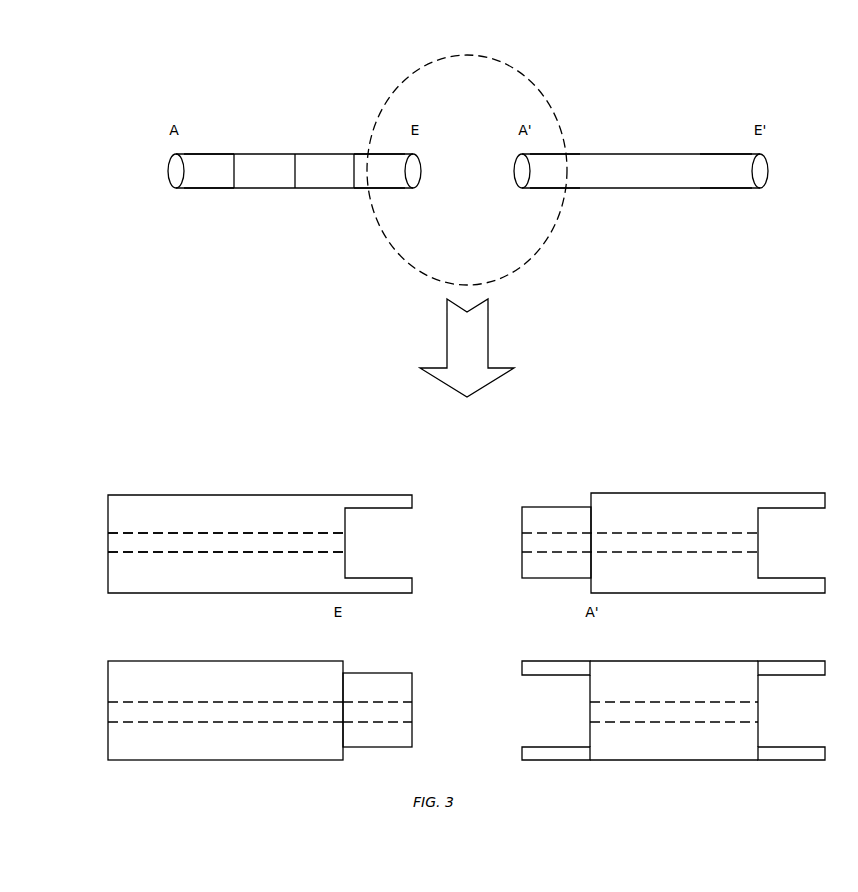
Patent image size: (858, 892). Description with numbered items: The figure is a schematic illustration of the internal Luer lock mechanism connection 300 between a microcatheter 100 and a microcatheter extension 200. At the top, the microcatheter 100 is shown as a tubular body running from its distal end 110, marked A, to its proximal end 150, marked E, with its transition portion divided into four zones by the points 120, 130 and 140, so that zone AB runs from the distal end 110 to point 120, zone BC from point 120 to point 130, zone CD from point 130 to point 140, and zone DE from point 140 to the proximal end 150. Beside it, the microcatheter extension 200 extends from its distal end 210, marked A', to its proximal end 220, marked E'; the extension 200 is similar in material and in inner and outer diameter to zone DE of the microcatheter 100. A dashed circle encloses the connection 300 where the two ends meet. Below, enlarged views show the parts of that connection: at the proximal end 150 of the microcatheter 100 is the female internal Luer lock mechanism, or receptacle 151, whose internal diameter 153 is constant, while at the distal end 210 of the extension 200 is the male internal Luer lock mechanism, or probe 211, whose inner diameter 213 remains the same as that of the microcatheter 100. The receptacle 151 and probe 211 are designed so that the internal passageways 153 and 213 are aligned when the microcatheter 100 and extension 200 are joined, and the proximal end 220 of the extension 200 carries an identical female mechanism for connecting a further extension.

The microcatheter 100 is at (294, 145).
The distal end 110 is at (225, 457).
The zone boundary B 120 is at (236, 186).
The zone boundary C 130 is at (296, 186).
The zone boundary D 140 is at (358, 186).
The proximal end 150 is at (388, 450).
The microcatheter extension 200 is at (641, 145).
The distal end of microcatheter extension 210 is at (549, 457).
The proximal end of microcatheter extension 220 is at (763, 457).
The internal Luer lock mechanism connection 300 is at (467, 154).
The female internal Luer lock mechanism 151 is at (348, 462).
The internal diameter 153 is at (202, 542).
The male internal Luer lock mechanism 211 is at (586, 460).
The inner diameter 213 is at (702, 647).